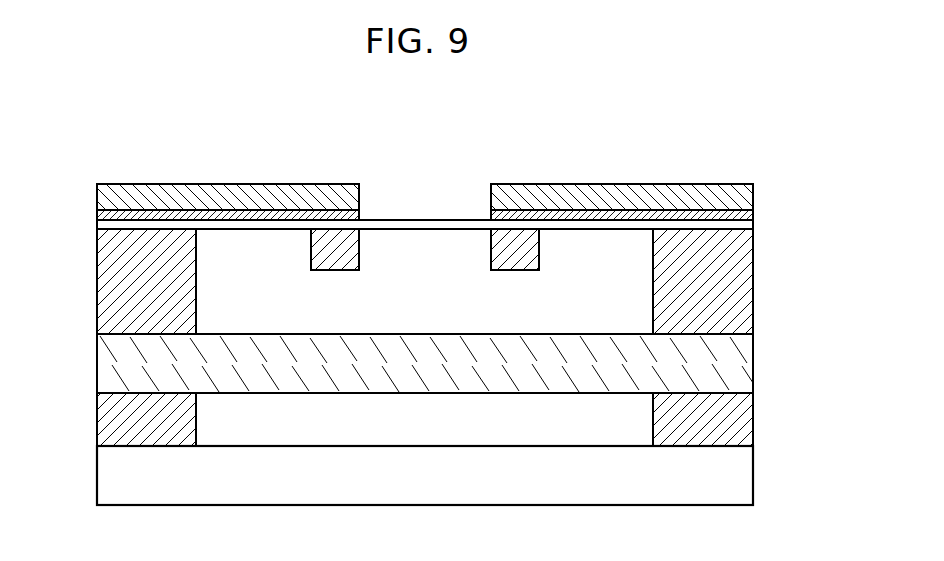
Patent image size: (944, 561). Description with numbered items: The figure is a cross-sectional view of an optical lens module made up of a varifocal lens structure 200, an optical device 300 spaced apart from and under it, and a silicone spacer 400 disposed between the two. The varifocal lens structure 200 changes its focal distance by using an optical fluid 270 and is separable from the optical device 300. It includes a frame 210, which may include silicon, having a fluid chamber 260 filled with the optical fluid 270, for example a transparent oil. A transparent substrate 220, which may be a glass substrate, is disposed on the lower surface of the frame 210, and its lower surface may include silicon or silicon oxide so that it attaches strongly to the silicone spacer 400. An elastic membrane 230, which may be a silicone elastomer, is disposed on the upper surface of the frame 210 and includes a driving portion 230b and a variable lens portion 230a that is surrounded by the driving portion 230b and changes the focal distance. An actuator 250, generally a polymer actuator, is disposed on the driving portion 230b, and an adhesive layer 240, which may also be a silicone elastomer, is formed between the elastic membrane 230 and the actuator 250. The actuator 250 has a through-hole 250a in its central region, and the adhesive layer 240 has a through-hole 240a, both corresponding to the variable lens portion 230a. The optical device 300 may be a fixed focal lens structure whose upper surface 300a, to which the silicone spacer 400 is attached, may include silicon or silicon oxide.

The varifocal lens structure 200 is at (92, 192).
The frame 210 is at (753, 284).
The transparent substrate 220 is at (753, 363).
The elastic membrane 230 is at (768, 230).
The variable lens portion 230a is at (246, 226).
The driving portion 230b is at (607, 226).
The adhesive layer 240 is at (753, 215).
The through-hole 240a is at (490, 213).
The actuator 250 is at (753, 198).
The through-hole 250a is at (488, 212).
The fluid chamber 260 is at (424, 281).
The optical fluid 270 is at (592, 300).
The optical device 300 is at (768, 482).
The upper surface 300a is at (425, 447).
The silicone spacer 400 is at (753, 420).